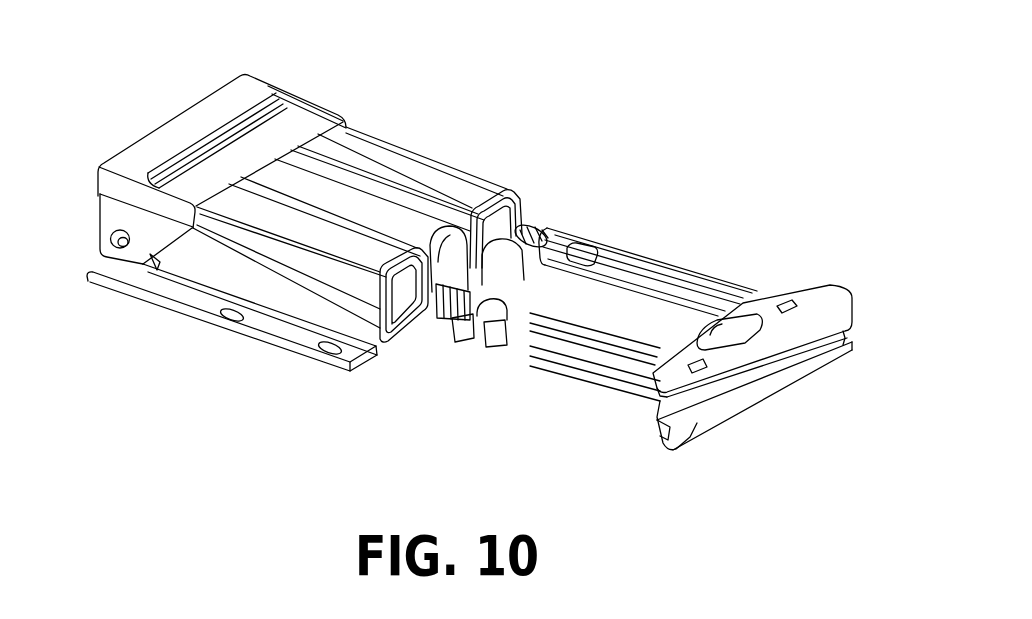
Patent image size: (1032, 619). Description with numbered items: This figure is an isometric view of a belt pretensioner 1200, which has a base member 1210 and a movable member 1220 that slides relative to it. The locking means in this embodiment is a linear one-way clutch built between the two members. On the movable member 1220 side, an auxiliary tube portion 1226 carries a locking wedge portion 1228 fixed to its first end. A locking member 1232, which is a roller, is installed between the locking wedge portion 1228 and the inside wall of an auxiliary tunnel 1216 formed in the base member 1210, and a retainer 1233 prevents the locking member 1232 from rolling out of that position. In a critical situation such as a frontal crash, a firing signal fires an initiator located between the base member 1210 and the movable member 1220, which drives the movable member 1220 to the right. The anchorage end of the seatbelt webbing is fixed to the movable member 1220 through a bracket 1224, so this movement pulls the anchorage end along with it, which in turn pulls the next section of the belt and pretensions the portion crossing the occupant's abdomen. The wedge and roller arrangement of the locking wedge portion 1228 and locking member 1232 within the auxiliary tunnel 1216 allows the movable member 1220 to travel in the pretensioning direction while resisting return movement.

The hinge assembly 1200 is at (541, 186).
The first hinge member / mounting block 1210 is at (399, 95).
The mounting plate 1216 is at (423, 177).
The second hinge member 1220 is at (683, 234).
The end block 1224 is at (833, 313).
The arm 1226 is at (583, 368).
The pin 1228 is at (460, 327).
The hinge knuckle 1232 is at (447, 305).
The hinge bracket 1233 is at (432, 312).